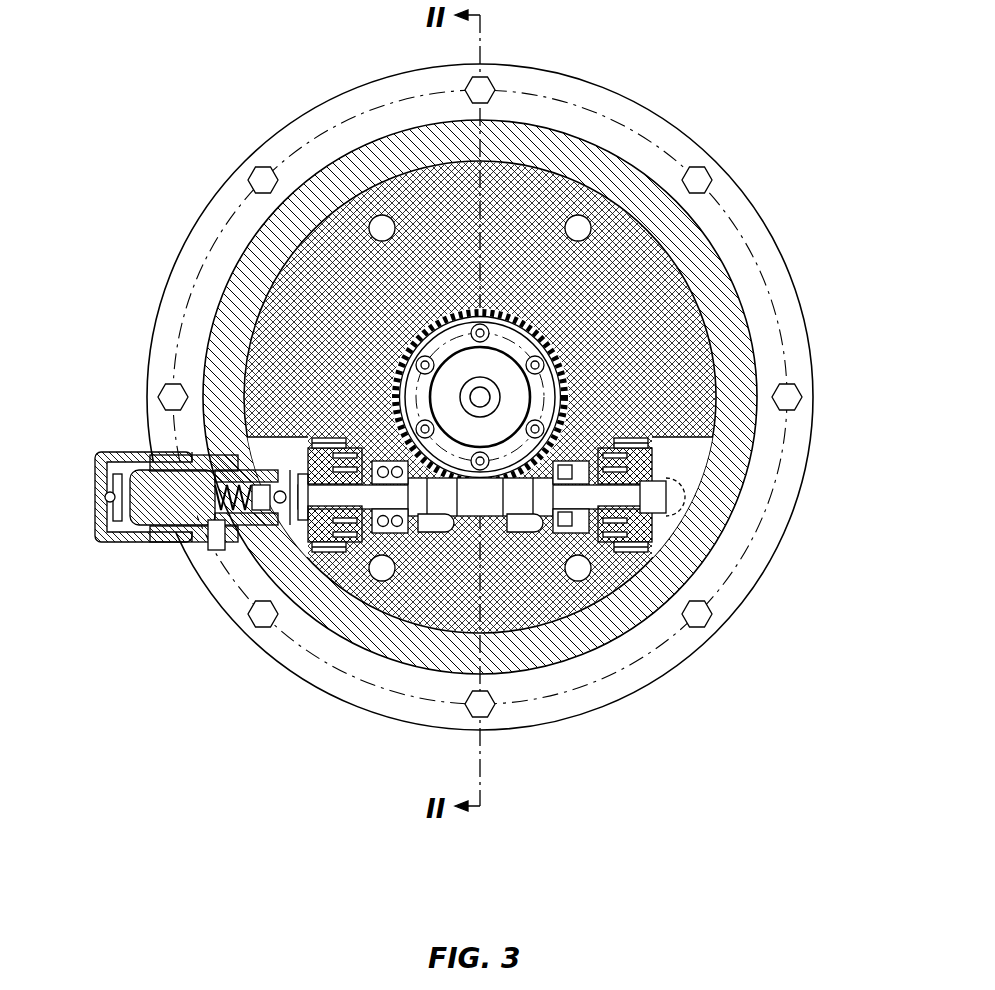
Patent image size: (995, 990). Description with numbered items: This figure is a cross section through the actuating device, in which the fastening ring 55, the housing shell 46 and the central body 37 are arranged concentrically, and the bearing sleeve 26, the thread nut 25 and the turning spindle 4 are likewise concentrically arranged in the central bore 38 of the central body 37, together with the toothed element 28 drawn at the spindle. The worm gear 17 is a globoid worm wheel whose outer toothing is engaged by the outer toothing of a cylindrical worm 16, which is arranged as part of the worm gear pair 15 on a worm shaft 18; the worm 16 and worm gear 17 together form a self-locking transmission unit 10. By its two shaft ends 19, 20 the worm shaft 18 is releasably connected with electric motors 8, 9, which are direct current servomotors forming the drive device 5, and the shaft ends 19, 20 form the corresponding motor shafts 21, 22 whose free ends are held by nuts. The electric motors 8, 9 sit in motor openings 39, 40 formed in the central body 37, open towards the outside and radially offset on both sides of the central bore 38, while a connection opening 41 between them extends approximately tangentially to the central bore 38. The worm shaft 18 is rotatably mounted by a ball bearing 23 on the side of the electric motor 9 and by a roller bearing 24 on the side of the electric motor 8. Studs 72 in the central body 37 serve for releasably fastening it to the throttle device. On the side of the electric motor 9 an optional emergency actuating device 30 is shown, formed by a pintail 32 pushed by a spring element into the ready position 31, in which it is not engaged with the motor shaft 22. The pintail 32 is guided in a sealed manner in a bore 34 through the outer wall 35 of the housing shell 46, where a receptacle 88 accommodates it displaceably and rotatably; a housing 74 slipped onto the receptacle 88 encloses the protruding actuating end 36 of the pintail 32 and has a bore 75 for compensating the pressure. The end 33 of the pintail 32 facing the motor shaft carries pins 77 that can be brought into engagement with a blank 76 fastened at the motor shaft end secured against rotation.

The turning spindle 4 is at (690, 302).
The outer wall 35 is at (150, 346).
The fastening ring 55 is at (587, 97).
The housing shell 46 is at (613, 168).
The central body 37 is at (622, 262).
The studs 72 is at (372, 214).
The motor opening 40 is at (222, 392).
The motor opening 39 is at (678, 455).
The bearing sleeve 26 is at (492, 312).
The gear teeth 28 is at (458, 312).
The central bore 38 is at (537, 318).
The thread nut 25 is at (466, 352).
The ball bearing 23 is at (432, 356).
The worm gear pair 15 is at (597, 582).
The worm gear 17 is at (490, 396).
The worm 16 is at (395, 538).
The connection opening 41 is at (503, 552).
The transmission unit 10 is at (445, 552).
The drive device 5 is at (557, 624).
The shaft end 20 is at (337, 624).
The motor shaft 22 is at (347, 552).
The electric motor 9 is at (330, 548).
The shaft end 19 is at (642, 587).
The motor shaft 21 is at (612, 556).
The electric motor 8 is at (655, 522).
The worm shaft 18 is at (507, 530).
The roller bearing 24 is at (602, 604).
The emergency actuating device 30 is at (162, 567).
The housing 74 is at (98, 458).
The bore 34 is at (188, 453).
The pintail 32 is at (121, 548).
The ready position 31 is at (137, 542).
The bore 75 is at (106, 487).
The actuating end 36 is at (110, 498).
The end 33 is at (262, 522).
The pins 77 is at (250, 540).
The blank 76 is at (300, 542).
The receptacle 88 is at (205, 550).